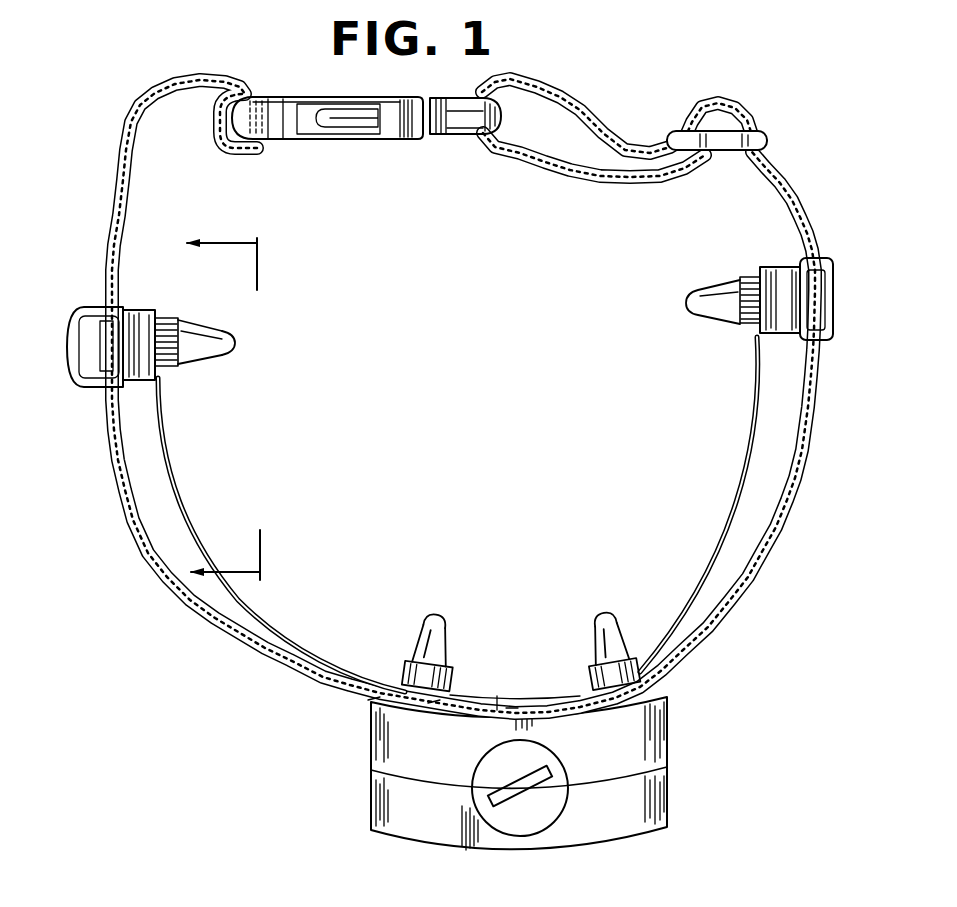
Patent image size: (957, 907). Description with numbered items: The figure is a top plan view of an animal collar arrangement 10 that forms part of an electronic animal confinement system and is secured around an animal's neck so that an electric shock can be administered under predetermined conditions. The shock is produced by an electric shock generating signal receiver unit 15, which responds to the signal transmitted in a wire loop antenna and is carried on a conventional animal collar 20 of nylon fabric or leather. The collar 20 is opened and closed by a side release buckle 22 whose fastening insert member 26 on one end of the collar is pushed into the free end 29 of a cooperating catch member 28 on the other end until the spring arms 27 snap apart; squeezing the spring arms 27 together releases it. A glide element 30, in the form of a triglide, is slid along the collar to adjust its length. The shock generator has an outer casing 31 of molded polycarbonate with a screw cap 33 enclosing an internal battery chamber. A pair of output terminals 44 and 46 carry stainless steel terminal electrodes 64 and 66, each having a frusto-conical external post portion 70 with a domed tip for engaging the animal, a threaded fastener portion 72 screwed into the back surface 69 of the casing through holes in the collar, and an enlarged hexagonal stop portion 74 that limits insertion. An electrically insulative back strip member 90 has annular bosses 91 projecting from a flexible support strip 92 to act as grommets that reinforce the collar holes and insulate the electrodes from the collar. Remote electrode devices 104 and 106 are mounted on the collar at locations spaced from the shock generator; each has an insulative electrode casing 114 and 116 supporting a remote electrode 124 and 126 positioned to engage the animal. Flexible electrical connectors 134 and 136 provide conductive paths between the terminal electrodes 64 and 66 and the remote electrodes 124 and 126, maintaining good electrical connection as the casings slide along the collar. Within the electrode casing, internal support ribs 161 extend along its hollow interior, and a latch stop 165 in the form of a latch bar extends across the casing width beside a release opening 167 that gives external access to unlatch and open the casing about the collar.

The animal collar arrangement 10 is at (686, 681).
The electric shock generating signal receiver unit 15 is at (674, 732).
The animal collar 20 is at (108, 232).
The side release buckle 22 is at (349, 143).
The fastening insert member 26 is at (465, 136).
The spring arms 27 is at (329, 112).
The catch member 28 is at (283, 140).
The free end 29 is at (451, 136).
The glide element 30 is at (757, 131).
The outer casing 31 is at (368, 756).
The screw cap 33 is at (528, 820).
The output terminal 44 is at (433, 615).
The output terminal 46 is at (601, 613).
The output terminal electrode 64 is at (412, 633).
The output terminal electrode 66 is at (629, 631).
The back surface 69 is at (497, 706).
The external post portion 70 is at (236, 336).
The fastener portion 72 is at (428, 703).
The enlarged hexagonal stop portion 74 is at (404, 664).
The back strip member 90 is at (485, 698).
The annular-shaped boss 91 is at (368, 700).
The support strip 92 is at (511, 705).
The remote electrode device 104 is at (217, 361).
The remote electrode device 106 is at (746, 329).
The electrode casing 114 is at (143, 307).
The electrode casing 116 is at (789, 261).
The remote electrode 124 is at (200, 322).
The remote electrode 126 is at (688, 291).
The flexible electrical connector 134 is at (183, 503).
The flexible electrical connector 136 is at (746, 481).
The internal support ribs 161 is at (86, 362).
The latch stop 165 is at (122, 366).
The release opening 167 is at (92, 330).